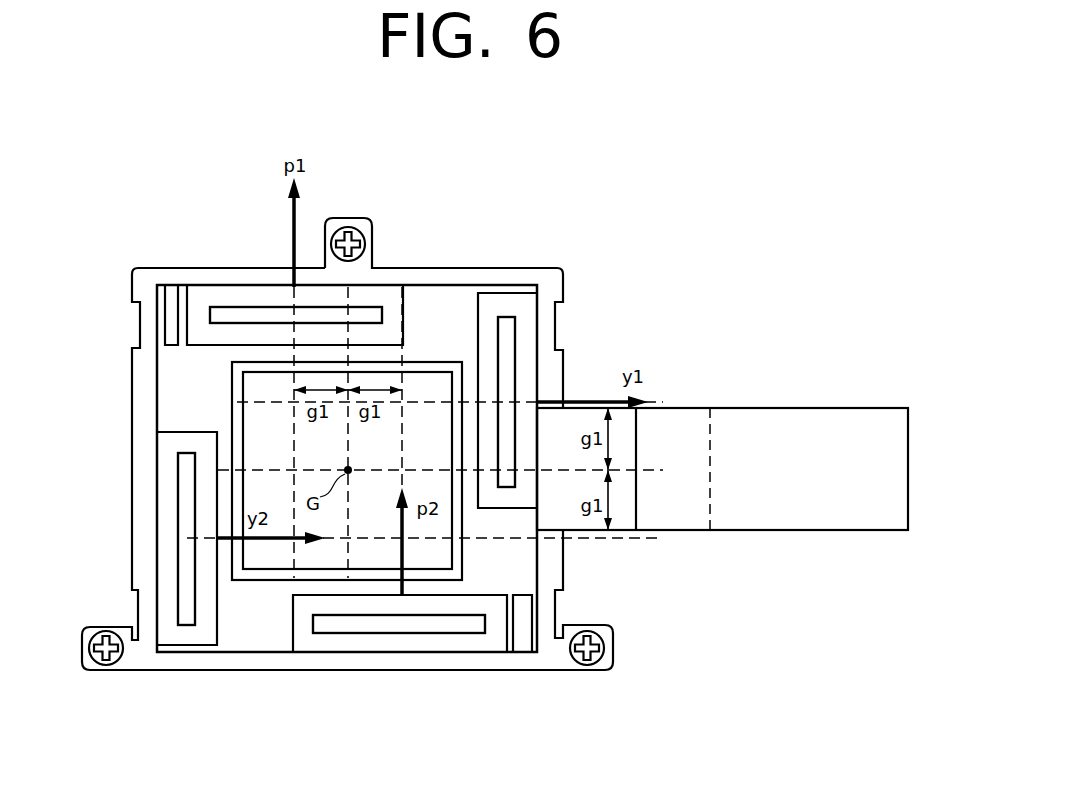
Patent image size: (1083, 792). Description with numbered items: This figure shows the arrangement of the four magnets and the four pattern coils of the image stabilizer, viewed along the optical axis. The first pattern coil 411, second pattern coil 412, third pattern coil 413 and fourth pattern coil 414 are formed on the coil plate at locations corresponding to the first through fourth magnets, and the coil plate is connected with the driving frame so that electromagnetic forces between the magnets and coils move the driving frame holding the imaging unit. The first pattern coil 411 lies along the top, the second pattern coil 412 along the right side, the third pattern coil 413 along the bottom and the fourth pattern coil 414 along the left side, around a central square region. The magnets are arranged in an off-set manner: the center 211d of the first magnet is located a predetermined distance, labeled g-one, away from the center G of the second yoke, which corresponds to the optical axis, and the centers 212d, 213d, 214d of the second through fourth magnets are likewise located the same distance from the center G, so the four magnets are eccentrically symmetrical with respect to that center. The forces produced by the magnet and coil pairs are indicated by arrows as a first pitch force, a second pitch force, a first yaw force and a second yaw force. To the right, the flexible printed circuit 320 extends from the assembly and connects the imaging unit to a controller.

The first pattern coil 411 is at (392, 293).
The second pattern coil 412 is at (510, 302).
The third pattern coil 413 is at (428, 645).
The fourth pattern coil 414 is at (168, 533).
The center of the first magnet 211d is at (293, 318).
The center of the second magnet 212d is at (505, 402).
The center of the third magnet 213d is at (402, 617).
The center of the fourth magnet 214d is at (190, 537).
The flexible printed circuit 320 is at (778, 418).